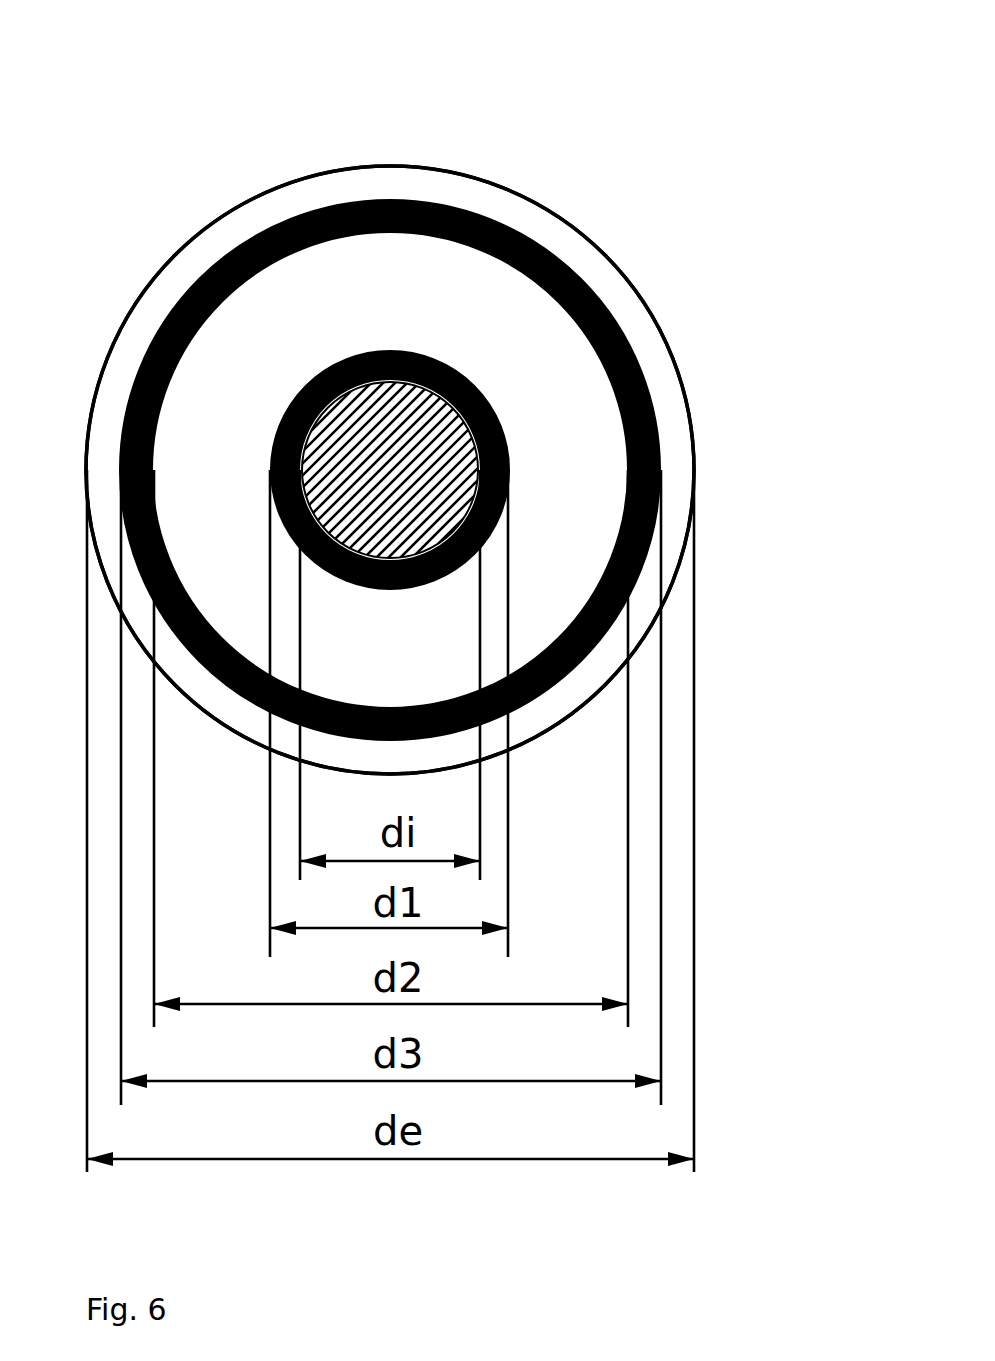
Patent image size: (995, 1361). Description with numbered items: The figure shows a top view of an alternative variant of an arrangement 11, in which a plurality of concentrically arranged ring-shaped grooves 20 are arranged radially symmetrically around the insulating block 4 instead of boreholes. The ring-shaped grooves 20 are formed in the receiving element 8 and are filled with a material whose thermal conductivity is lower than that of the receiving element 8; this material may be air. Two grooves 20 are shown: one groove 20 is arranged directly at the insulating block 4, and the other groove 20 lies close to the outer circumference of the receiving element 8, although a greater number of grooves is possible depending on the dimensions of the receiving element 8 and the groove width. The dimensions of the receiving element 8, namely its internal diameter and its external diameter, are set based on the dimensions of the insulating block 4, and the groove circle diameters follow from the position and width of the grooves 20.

The arrangement 11 is at (208, 196).
The insulating block 4 is at (372, 440).
The receiving element 8 is at (505, 215).
The ring-shaped grooves 20 is at (507, 443).